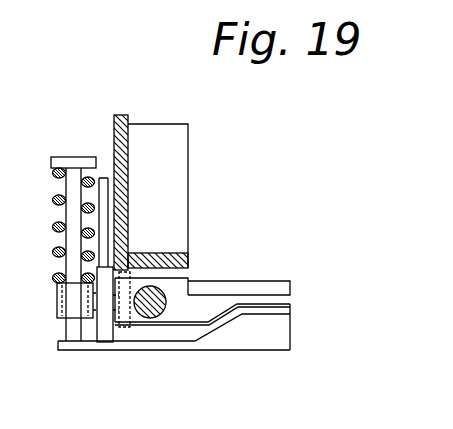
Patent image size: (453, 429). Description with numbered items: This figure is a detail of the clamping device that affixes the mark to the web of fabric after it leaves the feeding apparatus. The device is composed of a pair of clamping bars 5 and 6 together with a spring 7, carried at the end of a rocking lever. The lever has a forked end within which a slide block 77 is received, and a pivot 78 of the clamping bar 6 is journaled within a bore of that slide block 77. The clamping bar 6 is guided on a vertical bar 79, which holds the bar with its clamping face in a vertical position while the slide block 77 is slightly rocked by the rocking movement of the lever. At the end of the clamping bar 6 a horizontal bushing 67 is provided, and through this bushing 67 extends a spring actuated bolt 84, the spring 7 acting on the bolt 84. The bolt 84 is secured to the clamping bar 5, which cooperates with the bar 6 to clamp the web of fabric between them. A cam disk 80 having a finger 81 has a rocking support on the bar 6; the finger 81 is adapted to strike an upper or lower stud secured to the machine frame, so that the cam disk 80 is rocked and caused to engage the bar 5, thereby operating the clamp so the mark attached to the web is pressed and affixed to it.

The clamping bar 5 is at (182, 345).
The clamping bar 6 is at (260, 290).
The spring 7 is at (57, 223).
The horizontal bushing 67 is at (60, 300).
The slide block 77 is at (108, 312).
The pivot 78 is at (115, 322).
The vertical bar 79 is at (163, 295).
The cam disk 80 is at (107, 283).
The finger 81 is at (105, 218).
The spring actuated bolt 84 is at (72, 188).